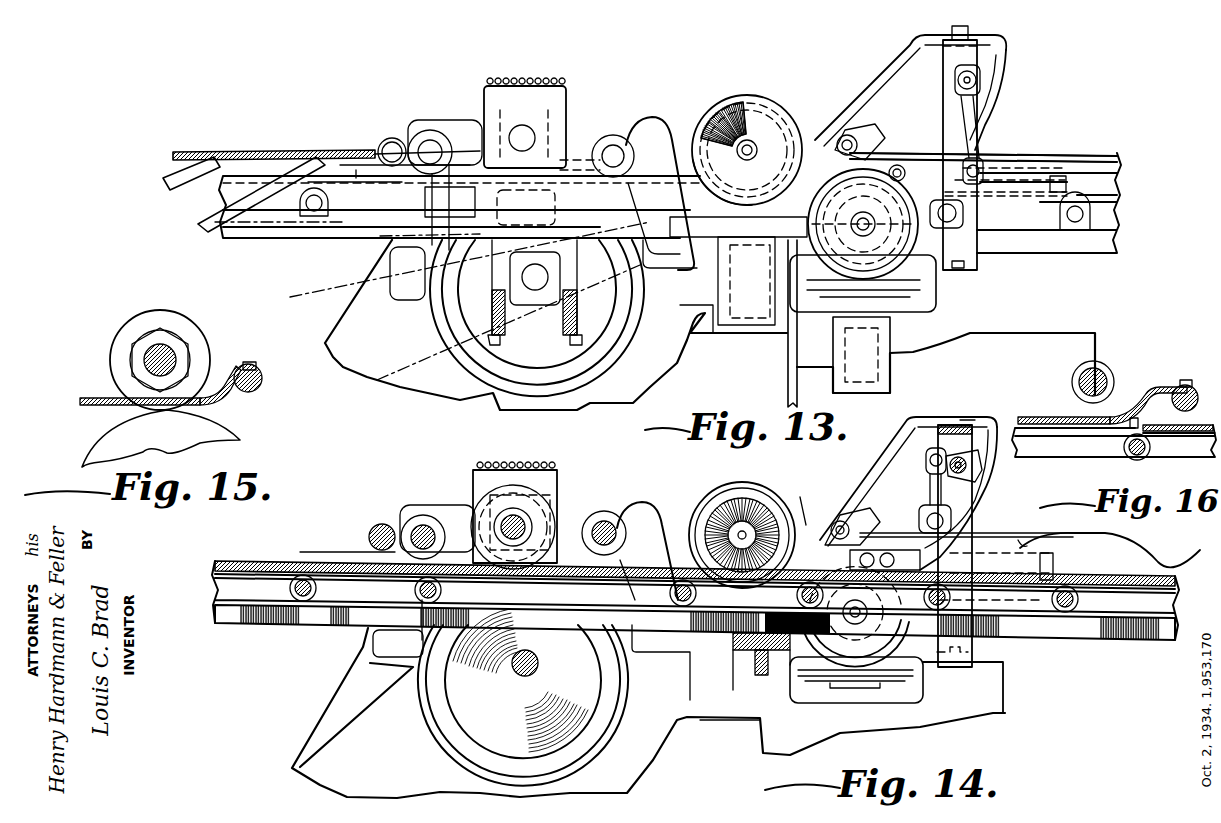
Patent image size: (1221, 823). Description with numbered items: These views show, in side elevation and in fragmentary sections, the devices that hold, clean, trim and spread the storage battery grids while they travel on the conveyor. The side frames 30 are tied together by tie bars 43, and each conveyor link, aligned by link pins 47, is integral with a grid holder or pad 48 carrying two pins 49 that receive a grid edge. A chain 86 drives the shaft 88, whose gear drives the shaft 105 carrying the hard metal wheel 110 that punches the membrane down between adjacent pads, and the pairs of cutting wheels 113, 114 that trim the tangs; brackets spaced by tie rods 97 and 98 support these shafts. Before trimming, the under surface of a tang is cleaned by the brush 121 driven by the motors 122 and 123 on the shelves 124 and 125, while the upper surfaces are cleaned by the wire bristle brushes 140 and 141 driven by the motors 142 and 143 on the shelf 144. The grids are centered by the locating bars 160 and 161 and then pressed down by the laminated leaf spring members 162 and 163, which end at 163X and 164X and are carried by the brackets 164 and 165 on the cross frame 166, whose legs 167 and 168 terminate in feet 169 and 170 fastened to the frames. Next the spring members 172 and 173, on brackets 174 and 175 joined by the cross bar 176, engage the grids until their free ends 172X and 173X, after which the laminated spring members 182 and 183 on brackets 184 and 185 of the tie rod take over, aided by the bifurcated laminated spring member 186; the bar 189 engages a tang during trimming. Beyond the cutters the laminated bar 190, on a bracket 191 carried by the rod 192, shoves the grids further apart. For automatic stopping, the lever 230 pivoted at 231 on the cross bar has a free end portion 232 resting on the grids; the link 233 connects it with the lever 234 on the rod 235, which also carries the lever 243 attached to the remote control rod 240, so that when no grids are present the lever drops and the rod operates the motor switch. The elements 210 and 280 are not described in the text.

In FIG. 13, the frame 30 is at (892, 364).
In FIG. 14, the frame 30 is at (988, 708).
In FIG. 14, the tie bar 43 is at (745, 652).
In FIG. 13, the link pin 47 is at (310, 212).
In FIG. 14, the link pin 47 is at (1067, 613).
In FIG. 16, the link pin 47 is at (1150, 447).
In FIG. 13, the grid holder or pad 48 is at (372, 184).
In FIG. 14, the grid holder or pad 48 is at (1135, 607).
In FIG. 16, the grid holder or pad 48 is at (1085, 450).
In FIG. 13, the pin 49 is at (1037, 202).
In FIG. 14, the pin 49 is at (1030, 565).
In FIG. 16, the pin 49 is at (1138, 420).
In FIG. 13, the chain 86 is at (480, 255).
In FIG. 13, the shaft 88 is at (548, 277).
In FIG. 14, the shaft 88 is at (518, 676).
In FIG. 13, the tie rod 97 is at (430, 130).
In FIG. 14, the tie rod 97 is at (423, 514).
In FIG. 13, the tie rod 98 is at (620, 145).
In FIG. 14, the tie rod 98 is at (606, 530).
In FIG. 15, the tie rod 98 is at (263, 385).
In FIG. 16, the tie rod 98 is at (1190, 378).
In FIG. 13, the shaft 105 is at (515, 136).
In FIG. 14, the shaft 105 is at (558, 490).
In FIG. 15, the shaft 105 is at (156, 355).
In FIG. 16, the shaft 105 is at (1105, 372).
In FIG. 14, the hard metal wheel 110 is at (480, 497).
In FIG. 13, the cutting wheel 113 is at (630, 333).
In FIG. 14, the cutting wheel 113 is at (612, 705).
In FIG. 15, the cutting wheel 113 is at (95, 443).
In FIG. 13, the cutting wheel 114 is at (484, 105).
In FIG. 15, the cutting wheel 114 is at (192, 330).
In FIG. 14, the brush 121 is at (880, 660).
In FIG. 13, the electric motor 122 is at (918, 314).
In FIG. 14, the electric motor 123 is at (923, 660).
In FIG. 13, the shelf 124 is at (825, 300).
In FIG. 14, the shelf 125 is at (813, 682).
In FIG. 13, the wire bristle brush 140 is at (735, 118).
In FIG. 14, the wire bristle brush 141 is at (722, 508).
In FIG. 13, the motor 142 is at (770, 107).
In FIG. 14, the motor 143 is at (748, 485).
In FIG. 13, the shelf 144 is at (730, 250).
In FIG. 13, the locating bar 160 is at (1112, 174).
In FIG. 14, the locating bar 161 is at (1103, 534).
In FIG. 13, the laminated leaf spring member 162 is at (980, 140).
In FIG. 14, the laminated leaf spring member 162 is at (978, 518).
In FIG. 13, the laminated leaf spring member 163 is at (1010, 184).
In FIG. 14, the laminated leaf spring member 163 is at (965, 556).
In FIG. 14, the spring end 163X is at (801, 497).
In FIG. 13, the bracket 164 is at (1007, 56).
In FIG. 13, the spring end 164X is at (790, 320).
In FIG. 14, the bracket 165 is at (996, 428).
In FIG. 13, the cross frame 166 is at (950, 44).
In FIG. 14, the cross frame 166 is at (942, 427).
In FIG. 13, the leg 167 is at (966, 261).
In FIG. 14, the leg 168 is at (966, 565).
In FIG. 13, the foot 169 is at (958, 272).
In FIG. 14, the foot 170 is at (970, 650).
In FIG. 13, the laminated leaf spring member 172 is at (856, 130).
In FIG. 13, the spring free end 172X is at (662, 132).
In FIG. 14, the laminated leaf spring member 173 is at (850, 520).
In FIG. 14, the spring free end 173X is at (650, 522).
In FIG. 13, the bracket 174 is at (872, 92).
In FIG. 14, the bracket 175 is at (866, 478).
In FIG. 13, the cross bar 176 is at (845, 136).
In FIG. 14, the cross bar 176 is at (832, 522).
In FIG. 13, the laminated spring member 182 is at (575, 135).
In FIG. 13, the laminated spring member 183 is at (955, 197).
In FIG. 14, the laminated spring member 183 is at (695, 573).
In FIG. 16, the laminated spring member 183 is at (1045, 417).
In FIG. 13, the bracket 184 is at (596, 140).
In FIG. 16, the bracket 185 is at (1155, 387).
In FIG. 14, the bifurcated laminated spring member 186 is at (578, 560).
In FIG. 15, the bar 189 is at (85, 398).
In FIG. 13, the laminated bar 190 is at (356, 170).
In FIG. 14, the laminated bar 190 is at (350, 560).
In FIG. 13, the bracket 191 is at (372, 265).
In FIG. 14, the bracket 191 is at (375, 650).
In FIG. 13, the rod 192 is at (392, 138).
In FIG. 14, the rod 192 is at (382, 523).
In FIG. 13, the strip 210 is at (330, 152).
In FIG. 13, the lever 230 is at (1072, 154).
In FIG. 14, the pivot 231 is at (853, 528).
In FIG. 14, the free end portion 232 is at (1142, 573).
In FIG. 14, the link 233 is at (930, 483).
In FIG. 14, the lever 234 is at (968, 460).
In FIG. 13, the rod 235 is at (956, 80).
In FIG. 14, the rod 235 is at (968, 472).
In FIG. 13, the rod 240 is at (1092, 172).
In FIG. 13, the lever 243 is at (968, 106).
In FIG. 14, the link 280 is at (1018, 540).